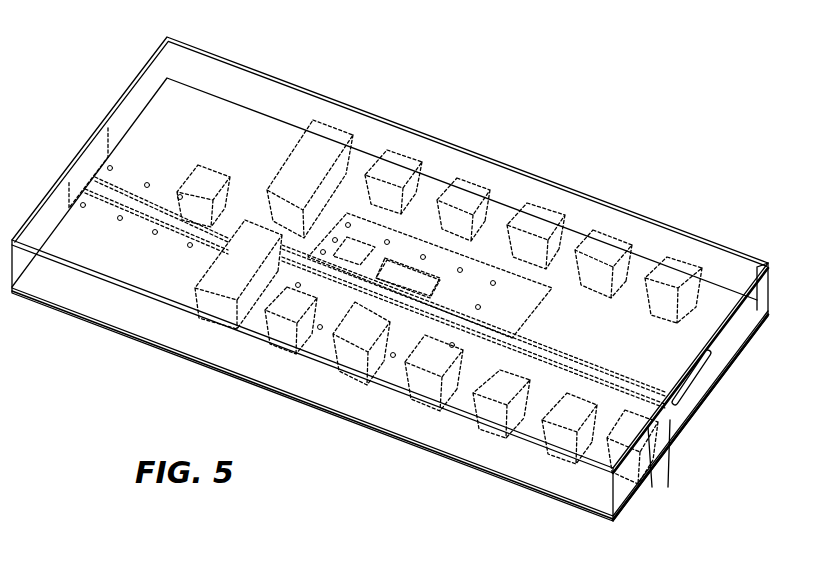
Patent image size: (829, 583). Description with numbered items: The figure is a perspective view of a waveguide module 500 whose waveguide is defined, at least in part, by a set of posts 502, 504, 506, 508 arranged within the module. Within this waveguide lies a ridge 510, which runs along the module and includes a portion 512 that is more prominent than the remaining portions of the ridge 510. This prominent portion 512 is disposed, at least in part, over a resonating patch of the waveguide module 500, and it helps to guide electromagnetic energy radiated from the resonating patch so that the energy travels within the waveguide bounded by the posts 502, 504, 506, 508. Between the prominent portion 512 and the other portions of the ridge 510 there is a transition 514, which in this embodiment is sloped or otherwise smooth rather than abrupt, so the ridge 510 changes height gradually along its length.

The waveguide module 500 is at (548, 132).
The post 502 is at (650, 220).
The post 504 is at (565, 417).
The post 506 is at (213, 280).
The post 508 is at (206, 185).
The ridge 510 is at (690, 378).
The prominent portion 512 is at (400, 273).
The transition 514 is at (450, 327).